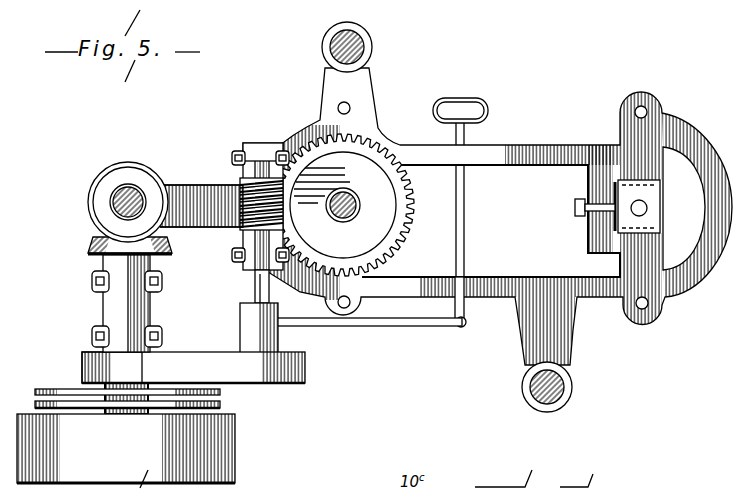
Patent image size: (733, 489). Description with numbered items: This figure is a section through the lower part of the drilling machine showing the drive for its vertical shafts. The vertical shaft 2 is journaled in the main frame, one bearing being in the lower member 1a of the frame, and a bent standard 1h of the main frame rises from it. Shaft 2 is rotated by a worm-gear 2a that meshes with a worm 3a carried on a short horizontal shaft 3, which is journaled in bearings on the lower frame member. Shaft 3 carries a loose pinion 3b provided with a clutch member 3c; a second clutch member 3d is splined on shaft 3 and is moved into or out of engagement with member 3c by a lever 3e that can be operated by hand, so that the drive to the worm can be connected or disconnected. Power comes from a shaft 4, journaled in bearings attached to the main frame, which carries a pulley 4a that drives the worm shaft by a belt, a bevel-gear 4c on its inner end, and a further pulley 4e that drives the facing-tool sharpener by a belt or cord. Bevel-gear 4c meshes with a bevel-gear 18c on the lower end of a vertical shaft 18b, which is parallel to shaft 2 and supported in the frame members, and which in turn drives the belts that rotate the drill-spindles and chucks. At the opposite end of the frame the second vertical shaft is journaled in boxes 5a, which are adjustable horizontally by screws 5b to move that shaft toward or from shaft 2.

The lower member of the main frame 1a is at (525, 282).
The standard of the main frame 1h is at (365, 40).
The vertical shaft 2 is at (358, 208).
The worm-gear 2a is at (414, 221).
The short horizontal shaft 3 is at (252, 282).
The worm 3a is at (237, 180).
The loose pinion 3b is at (300, 372).
The clutch member 3c is at (280, 343).
The clutch member 3d is at (246, 328).
The lever 3e is at (410, 326).
The shaft 4 is at (133, 400).
The pulley 4a is at (82, 362).
The bevel-gear 4c is at (86, 254).
The pulley 4e is at (222, 405).
The boxes 5a is at (658, 224).
The screws 5b is at (575, 207).
The vertical shaft 18b is at (137, 188).
The bevel-gear 18c is at (104, 212).